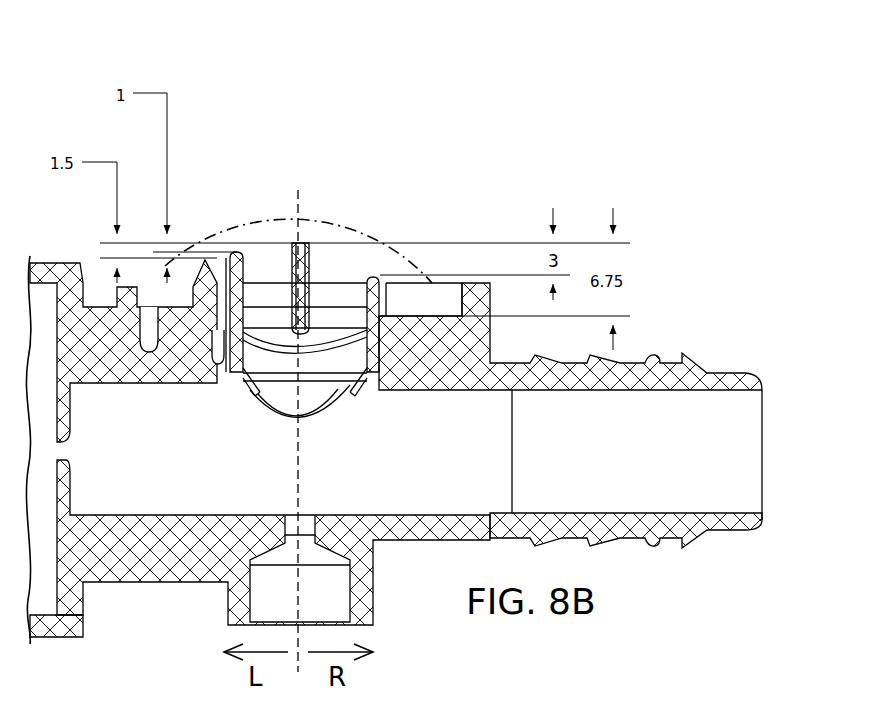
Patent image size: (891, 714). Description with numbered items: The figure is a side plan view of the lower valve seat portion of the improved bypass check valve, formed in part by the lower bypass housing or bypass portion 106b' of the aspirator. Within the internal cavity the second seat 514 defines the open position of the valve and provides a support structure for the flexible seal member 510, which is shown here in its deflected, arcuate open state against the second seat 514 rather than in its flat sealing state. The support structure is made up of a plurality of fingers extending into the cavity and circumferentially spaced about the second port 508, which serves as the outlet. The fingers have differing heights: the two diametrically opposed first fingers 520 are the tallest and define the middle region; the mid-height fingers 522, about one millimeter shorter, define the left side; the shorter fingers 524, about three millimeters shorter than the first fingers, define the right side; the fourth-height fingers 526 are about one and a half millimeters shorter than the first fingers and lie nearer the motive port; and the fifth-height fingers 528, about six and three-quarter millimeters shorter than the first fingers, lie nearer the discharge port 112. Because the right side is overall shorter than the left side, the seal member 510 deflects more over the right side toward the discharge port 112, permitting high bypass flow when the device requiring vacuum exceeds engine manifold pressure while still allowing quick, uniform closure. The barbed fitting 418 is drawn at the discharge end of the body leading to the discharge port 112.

The second seat 514 is at (388, 122).
The flexible seal member 510 is at (260, 214).
The mid-height fingers 522 is at (214, 254).
The first fingers 520 is at (309, 265).
The shorter fingers 524 is at (386, 300).
The fifth-height fingers 528 is at (448, 326).
The fourth-height fingers 526 is at (160, 330).
The second port 508 is at (363, 355).
The barbed hose fitting 418 is at (688, 360).
The discharge port 112 is at (763, 442).
The bypass portion 106b' is at (273, 552).